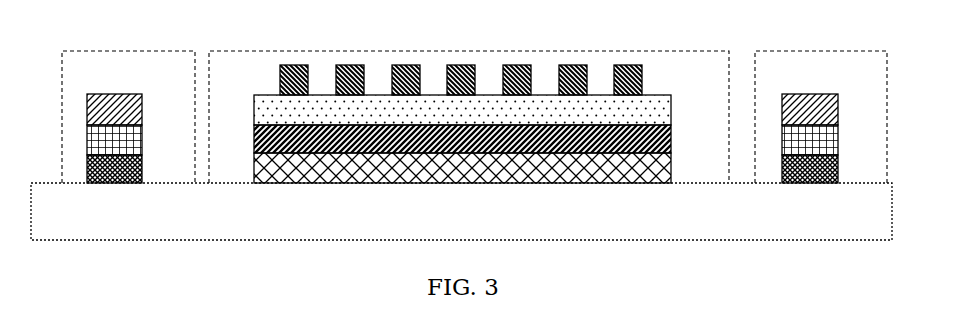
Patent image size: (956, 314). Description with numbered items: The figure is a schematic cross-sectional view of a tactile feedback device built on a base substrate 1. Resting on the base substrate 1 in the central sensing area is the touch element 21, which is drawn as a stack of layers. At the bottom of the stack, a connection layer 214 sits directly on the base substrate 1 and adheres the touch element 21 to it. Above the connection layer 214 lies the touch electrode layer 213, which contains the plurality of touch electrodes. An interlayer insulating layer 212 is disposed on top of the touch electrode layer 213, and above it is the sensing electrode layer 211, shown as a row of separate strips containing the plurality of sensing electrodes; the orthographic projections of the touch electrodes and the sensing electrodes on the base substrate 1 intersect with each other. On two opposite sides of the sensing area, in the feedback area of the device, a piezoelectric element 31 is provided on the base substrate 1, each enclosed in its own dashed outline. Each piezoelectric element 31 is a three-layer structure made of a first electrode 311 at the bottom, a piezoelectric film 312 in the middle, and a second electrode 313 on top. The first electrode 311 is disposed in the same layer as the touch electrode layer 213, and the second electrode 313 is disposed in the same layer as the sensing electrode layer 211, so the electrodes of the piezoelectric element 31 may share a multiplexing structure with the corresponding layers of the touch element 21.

The base substrate 1 is at (899, 200).
The touch element 21 is at (706, 58).
The sensing electrode layer 211 is at (272, 82).
The interlayer insulating layer 212 is at (664, 110).
The touch electrode layer 213 is at (670, 135).
The connection layer 214 is at (664, 168).
The piezoelectric element 31 is at (87, 58).
The first electrode 311 is at (142, 165).
The piezoelectric film 312 is at (142, 138).
The second electrode 313 is at (143, 102).